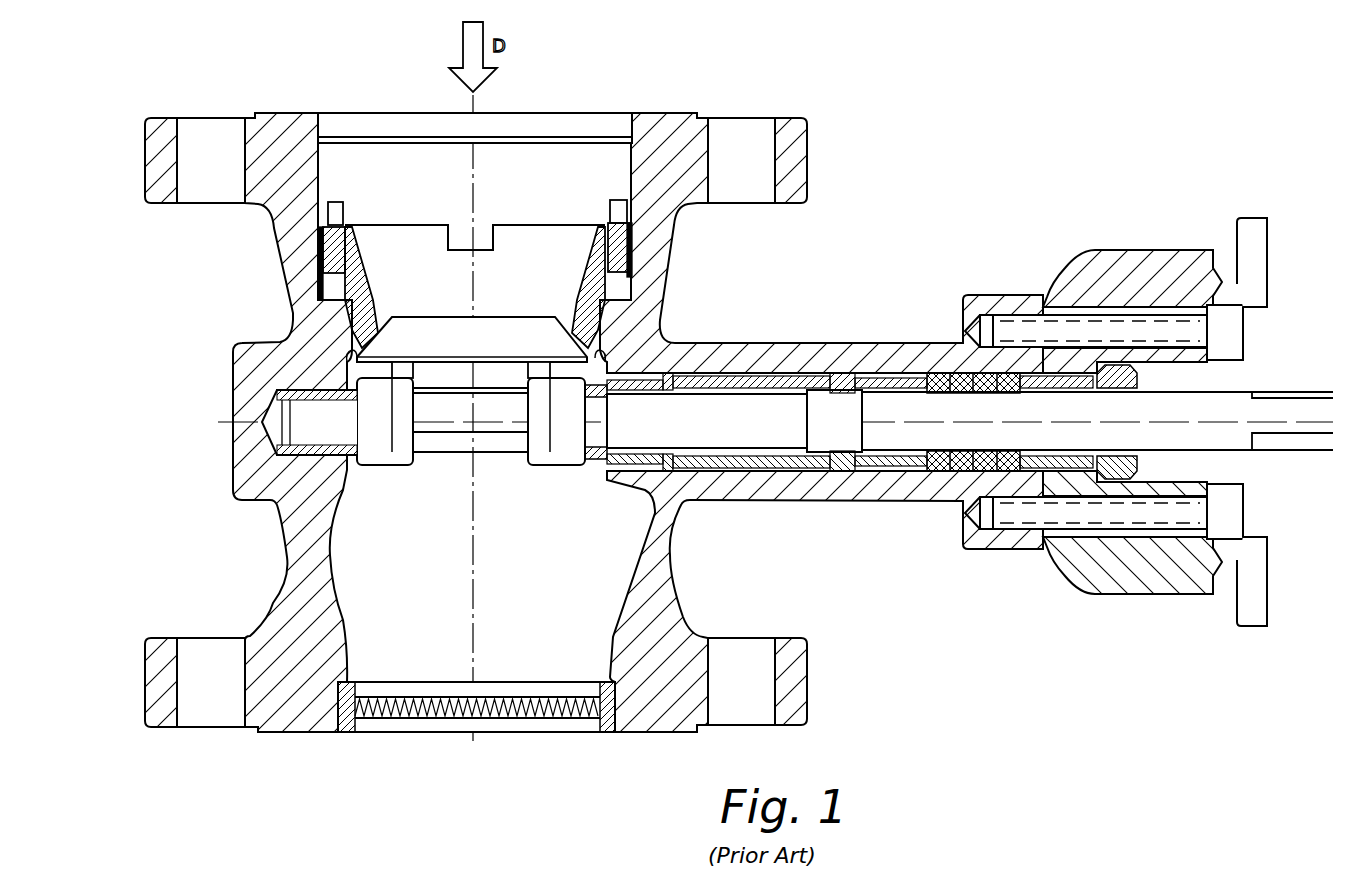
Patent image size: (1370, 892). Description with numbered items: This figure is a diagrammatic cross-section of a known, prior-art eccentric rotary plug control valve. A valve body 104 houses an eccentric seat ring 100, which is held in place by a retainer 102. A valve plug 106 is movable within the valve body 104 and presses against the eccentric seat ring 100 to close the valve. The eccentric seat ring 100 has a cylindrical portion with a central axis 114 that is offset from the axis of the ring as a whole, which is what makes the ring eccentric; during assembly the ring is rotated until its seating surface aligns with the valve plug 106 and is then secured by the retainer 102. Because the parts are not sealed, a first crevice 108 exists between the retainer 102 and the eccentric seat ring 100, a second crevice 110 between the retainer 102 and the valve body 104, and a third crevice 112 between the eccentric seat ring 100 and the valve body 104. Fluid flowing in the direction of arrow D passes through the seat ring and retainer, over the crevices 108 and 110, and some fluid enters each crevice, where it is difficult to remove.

The eccentric seat ring 100 is at (405, 259).
The retainer 102 is at (348, 203).
The valve body 104 is at (765, 503).
The valve plug 106 is at (400, 338).
The first crevice 108 is at (608, 225).
The second crevice 110 is at (622, 198).
The third crevice 112 is at (476, 104).
The central axis 114 is at (462, 222).